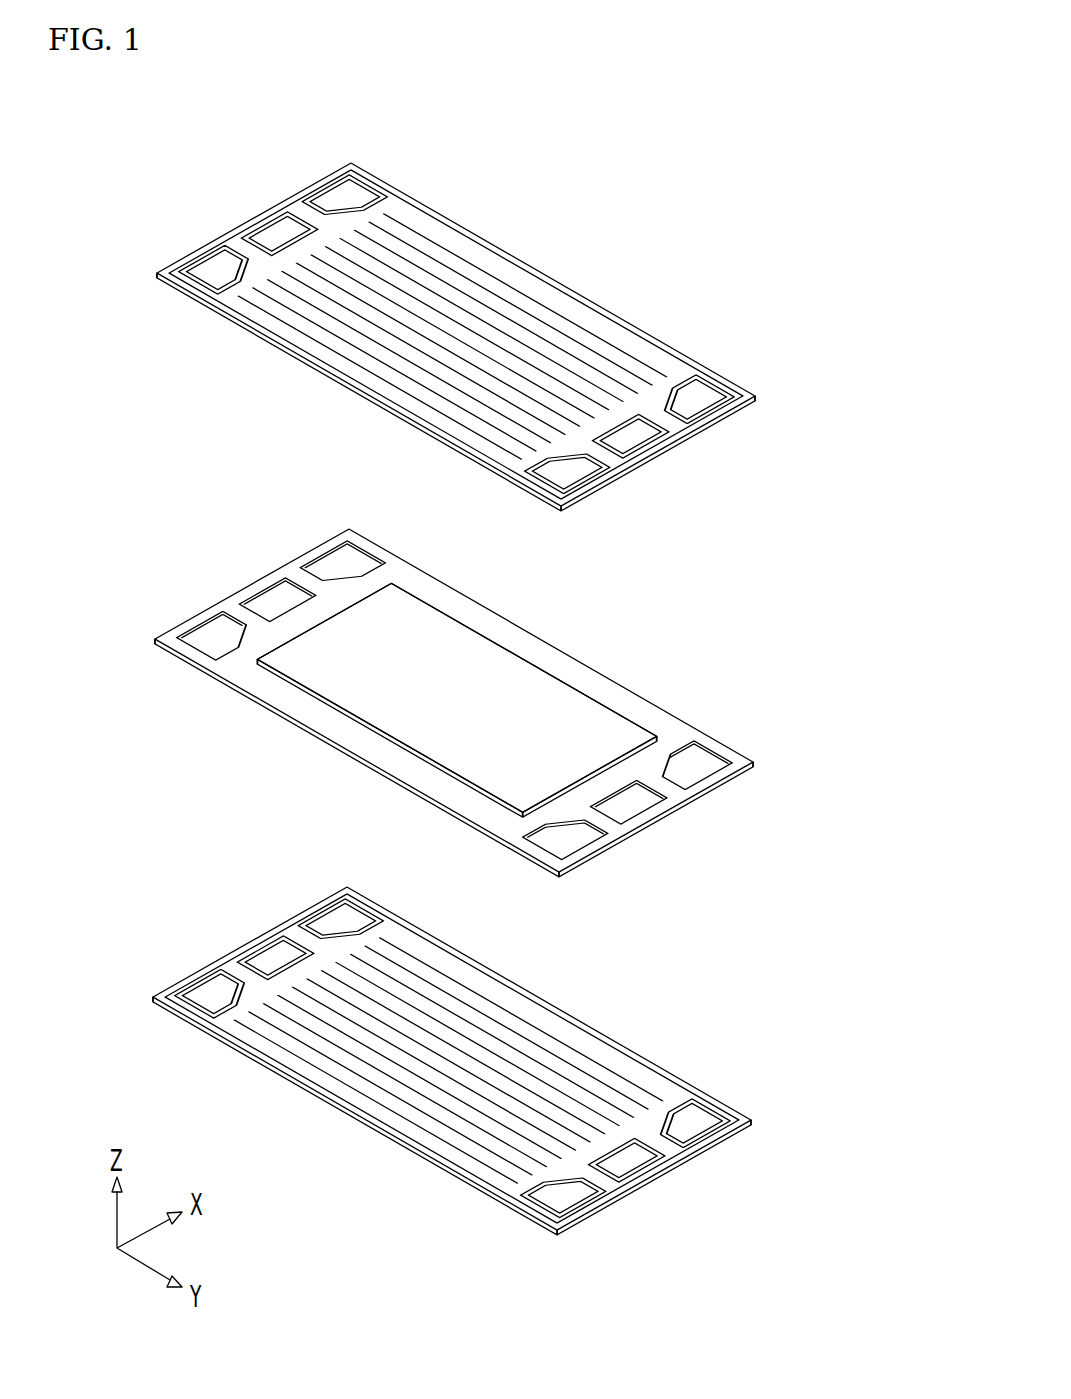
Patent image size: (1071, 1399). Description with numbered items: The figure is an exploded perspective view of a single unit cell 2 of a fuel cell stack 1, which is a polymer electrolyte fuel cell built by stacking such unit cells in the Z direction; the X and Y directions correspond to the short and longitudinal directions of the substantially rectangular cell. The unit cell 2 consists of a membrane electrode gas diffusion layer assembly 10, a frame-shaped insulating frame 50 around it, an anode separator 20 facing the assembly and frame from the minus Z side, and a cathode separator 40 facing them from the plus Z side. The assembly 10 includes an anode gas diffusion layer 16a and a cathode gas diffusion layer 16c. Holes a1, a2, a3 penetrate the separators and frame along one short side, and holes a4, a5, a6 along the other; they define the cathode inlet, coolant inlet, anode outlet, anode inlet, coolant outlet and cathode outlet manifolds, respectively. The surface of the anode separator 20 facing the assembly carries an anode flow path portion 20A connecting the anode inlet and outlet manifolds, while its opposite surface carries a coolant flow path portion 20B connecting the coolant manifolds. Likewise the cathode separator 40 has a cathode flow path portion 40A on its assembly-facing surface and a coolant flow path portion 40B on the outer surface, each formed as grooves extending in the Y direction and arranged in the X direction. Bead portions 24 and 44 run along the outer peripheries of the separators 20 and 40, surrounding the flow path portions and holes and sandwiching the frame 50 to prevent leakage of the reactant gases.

The fuel cell stack 1 is at (851, 187).
The unit cell 2 is at (711, 187).
The membrane electrode gas diffusion layer assembly 10 is at (340, 612).
The anode gas diffusion layer 16a is at (565, 762).
The cathode gas diffusion layer 16c is at (277, 643).
The anode separator 20 is at (613, 1020).
The anode flow path portion 20A is at (434, 966).
The coolant flow path portion 20B is at (297, 1066).
The bead portion 24 is at (515, 1200).
The cathode separator 40 is at (616, 301).
The cathode flow path portion 40A is at (422, 428).
The coolant flow path portion 40B is at (434, 244).
The bead portion 44 is at (318, 378).
The frame 50 is at (761, 764).
The hole a1 is at (356, 192).
The hole a2 is at (268, 233).
The hole a3 is at (205, 270).
The hole a4 is at (712, 405).
The hole a5 is at (644, 438).
The hole a6 is at (580, 472).